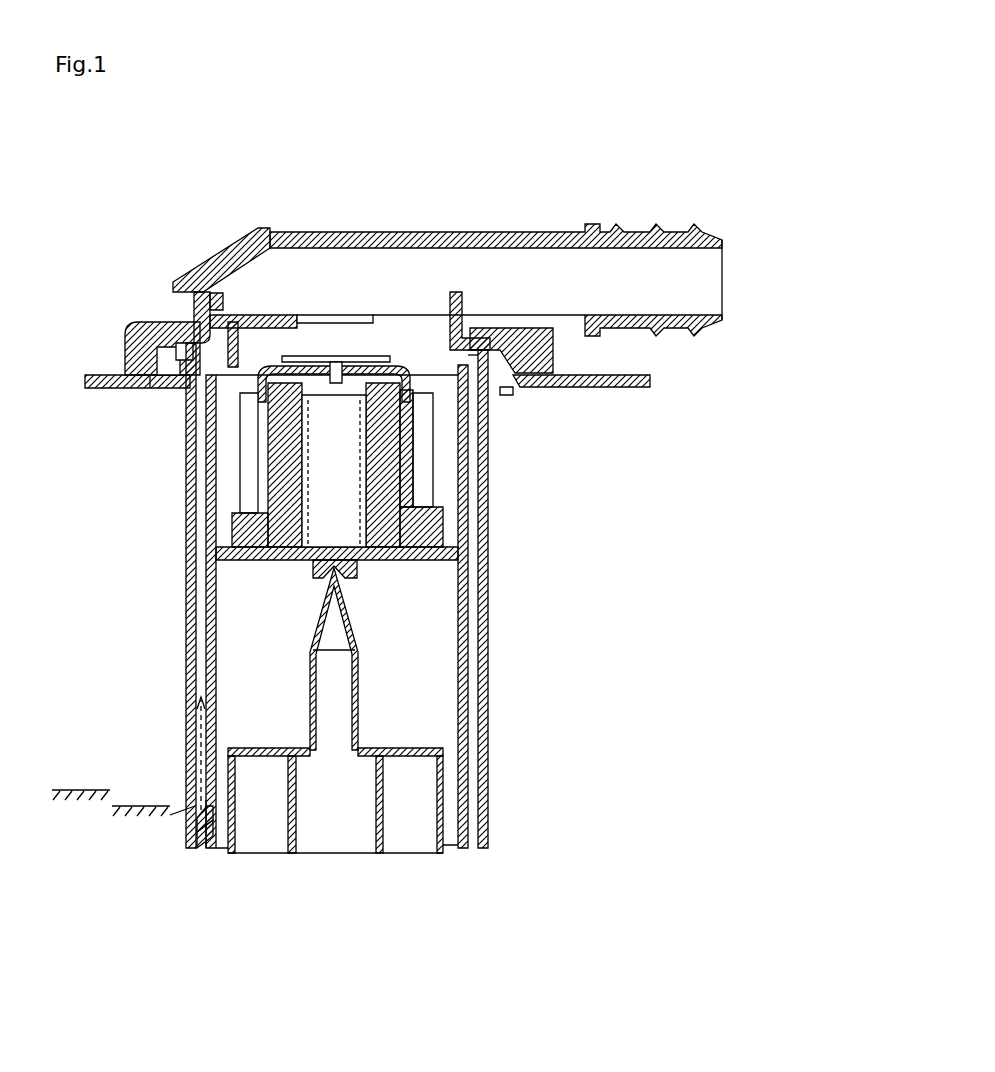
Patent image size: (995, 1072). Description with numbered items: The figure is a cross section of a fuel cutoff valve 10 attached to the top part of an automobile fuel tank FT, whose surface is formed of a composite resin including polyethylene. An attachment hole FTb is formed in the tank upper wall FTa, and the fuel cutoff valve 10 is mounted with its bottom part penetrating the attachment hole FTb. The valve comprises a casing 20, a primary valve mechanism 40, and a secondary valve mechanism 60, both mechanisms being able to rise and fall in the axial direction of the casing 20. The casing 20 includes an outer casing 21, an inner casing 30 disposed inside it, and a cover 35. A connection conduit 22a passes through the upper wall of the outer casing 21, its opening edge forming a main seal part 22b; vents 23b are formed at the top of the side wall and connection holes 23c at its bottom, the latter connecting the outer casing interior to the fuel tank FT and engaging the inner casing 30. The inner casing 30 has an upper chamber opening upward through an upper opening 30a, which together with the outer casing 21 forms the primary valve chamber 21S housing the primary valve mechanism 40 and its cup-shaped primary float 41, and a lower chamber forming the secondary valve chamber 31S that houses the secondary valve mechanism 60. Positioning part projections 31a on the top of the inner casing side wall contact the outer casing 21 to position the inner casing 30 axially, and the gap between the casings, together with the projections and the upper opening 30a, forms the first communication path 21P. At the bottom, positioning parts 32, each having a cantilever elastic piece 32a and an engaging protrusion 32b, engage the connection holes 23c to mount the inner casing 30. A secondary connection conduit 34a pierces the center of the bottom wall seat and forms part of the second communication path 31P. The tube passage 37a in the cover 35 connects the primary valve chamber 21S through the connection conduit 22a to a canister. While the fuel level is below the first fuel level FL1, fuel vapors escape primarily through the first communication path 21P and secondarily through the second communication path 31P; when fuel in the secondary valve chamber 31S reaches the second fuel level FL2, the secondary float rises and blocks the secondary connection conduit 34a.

The fuel cutoff valve 10 is at (627, 203).
The casing 20 is at (77, 423).
The outer casing 21 is at (186, 490).
The primary valve chamber 21S is at (248, 345).
The first communication path 21P is at (200, 655).
The connection conduit 22a is at (265, 307).
The main seal part 22b is at (400, 320).
The vents 23b is at (126, 350).
The connection holes 23c is at (212, 832).
The inner casing 30 is at (206, 552).
The upper opening 30a is at (210, 355).
The positioning part projections 31a is at (476, 393).
The second communication path 31P is at (293, 655).
The secondary valve chamber 31S is at (430, 665).
The positioning parts 32 is at (78, 838).
The elastic piece 32a is at (198, 832).
The engaging protrusion 32b is at (195, 823).
The secondary connection conduit 34a is at (330, 580).
The cover 35 is at (140, 385).
The tube passage 37a is at (601, 307).
The primary valve mechanism 40 is at (440, 472).
The primary float 41 is at (432, 505).
The secondary valve mechanism 60 is at (441, 722).
The fuel tank FT is at (598, 390).
The tank upper wall FTa is at (367, 381).
The attachment hole FTb is at (512, 385).
The first fuel level FL1 is at (140, 806).
The second fuel level FL2 is at (82, 790).